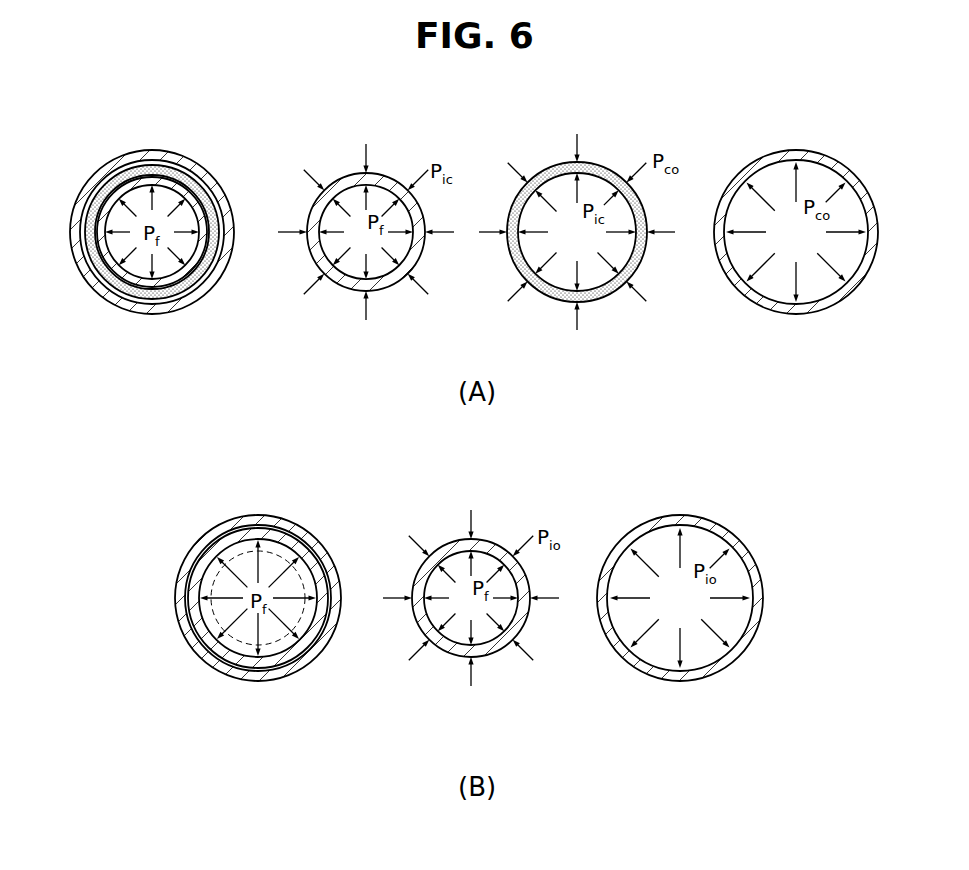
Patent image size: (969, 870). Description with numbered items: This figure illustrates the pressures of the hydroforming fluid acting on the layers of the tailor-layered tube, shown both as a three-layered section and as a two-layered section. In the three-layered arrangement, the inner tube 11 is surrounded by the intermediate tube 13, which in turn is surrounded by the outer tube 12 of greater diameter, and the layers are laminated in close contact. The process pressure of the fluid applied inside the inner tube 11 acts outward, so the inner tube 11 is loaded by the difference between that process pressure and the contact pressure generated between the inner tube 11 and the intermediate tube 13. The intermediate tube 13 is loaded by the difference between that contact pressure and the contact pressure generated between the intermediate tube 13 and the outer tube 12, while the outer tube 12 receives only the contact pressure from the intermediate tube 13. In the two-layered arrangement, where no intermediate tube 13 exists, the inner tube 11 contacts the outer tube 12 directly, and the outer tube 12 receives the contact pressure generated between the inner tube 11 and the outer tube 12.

The inner tube 11 is at (223, 273).
The outer tube 12 is at (165, 317).
The intermediate tube 13 is at (193, 293).